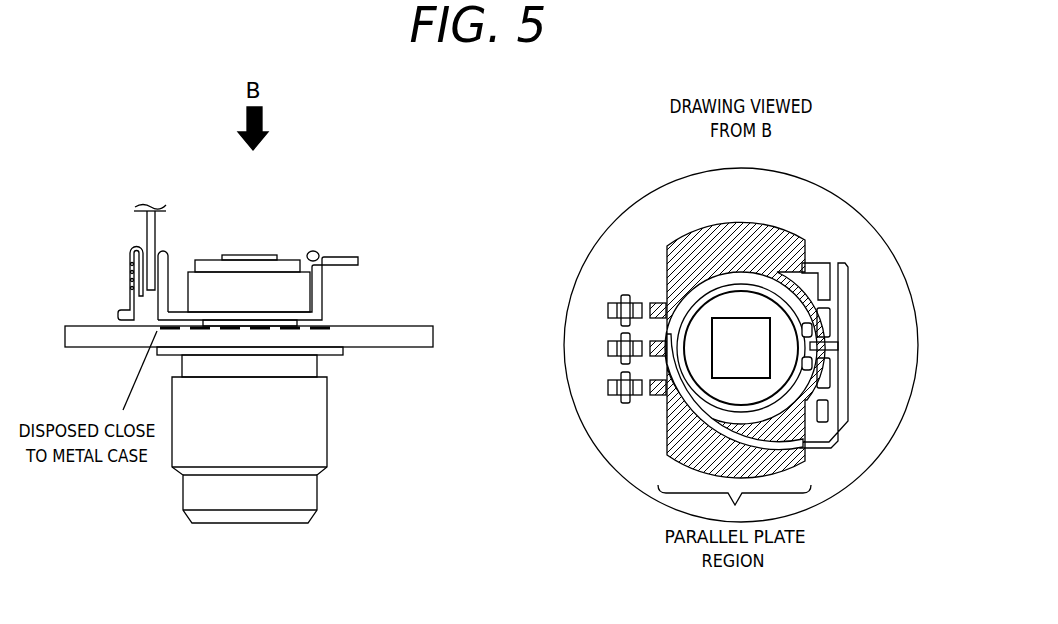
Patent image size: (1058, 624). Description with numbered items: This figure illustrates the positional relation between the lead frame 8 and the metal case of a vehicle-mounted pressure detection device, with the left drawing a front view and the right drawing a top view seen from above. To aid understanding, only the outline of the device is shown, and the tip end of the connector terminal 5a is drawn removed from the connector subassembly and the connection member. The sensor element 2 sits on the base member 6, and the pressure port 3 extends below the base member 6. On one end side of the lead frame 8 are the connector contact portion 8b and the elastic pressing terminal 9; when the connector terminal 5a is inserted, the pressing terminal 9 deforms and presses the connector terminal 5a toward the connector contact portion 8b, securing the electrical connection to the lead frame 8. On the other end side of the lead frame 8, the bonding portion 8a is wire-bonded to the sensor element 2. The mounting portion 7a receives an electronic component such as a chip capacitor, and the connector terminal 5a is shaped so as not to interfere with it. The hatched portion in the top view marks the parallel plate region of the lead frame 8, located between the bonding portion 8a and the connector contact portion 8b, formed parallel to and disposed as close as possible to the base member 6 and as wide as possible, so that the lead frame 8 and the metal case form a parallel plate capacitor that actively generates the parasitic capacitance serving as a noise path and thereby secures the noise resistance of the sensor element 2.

The sensor element 2 is at (258, 255).
The pressure port 3 is at (307, 417).
The connector terminal 5a is at (157, 225).
The base member 6 is at (413, 338).
The mounting portion 7a is at (358, 252).
The lead frame 8 is at (542, 304).
The bonding portion 8a is at (313, 252).
The connector contact portion 8b is at (167, 252).
The pressing terminal 9 is at (118, 238).